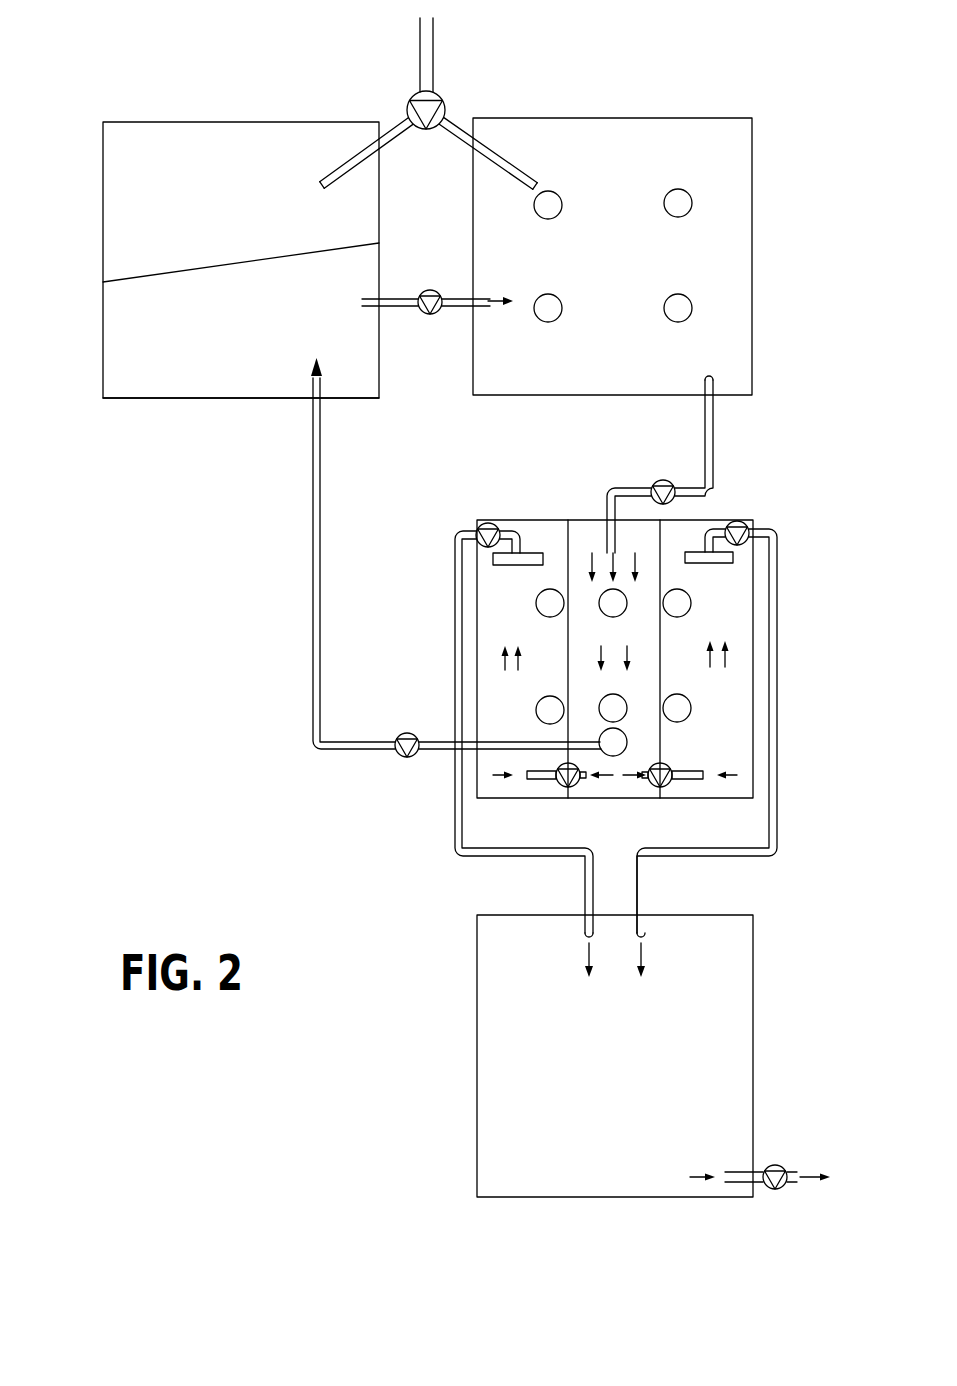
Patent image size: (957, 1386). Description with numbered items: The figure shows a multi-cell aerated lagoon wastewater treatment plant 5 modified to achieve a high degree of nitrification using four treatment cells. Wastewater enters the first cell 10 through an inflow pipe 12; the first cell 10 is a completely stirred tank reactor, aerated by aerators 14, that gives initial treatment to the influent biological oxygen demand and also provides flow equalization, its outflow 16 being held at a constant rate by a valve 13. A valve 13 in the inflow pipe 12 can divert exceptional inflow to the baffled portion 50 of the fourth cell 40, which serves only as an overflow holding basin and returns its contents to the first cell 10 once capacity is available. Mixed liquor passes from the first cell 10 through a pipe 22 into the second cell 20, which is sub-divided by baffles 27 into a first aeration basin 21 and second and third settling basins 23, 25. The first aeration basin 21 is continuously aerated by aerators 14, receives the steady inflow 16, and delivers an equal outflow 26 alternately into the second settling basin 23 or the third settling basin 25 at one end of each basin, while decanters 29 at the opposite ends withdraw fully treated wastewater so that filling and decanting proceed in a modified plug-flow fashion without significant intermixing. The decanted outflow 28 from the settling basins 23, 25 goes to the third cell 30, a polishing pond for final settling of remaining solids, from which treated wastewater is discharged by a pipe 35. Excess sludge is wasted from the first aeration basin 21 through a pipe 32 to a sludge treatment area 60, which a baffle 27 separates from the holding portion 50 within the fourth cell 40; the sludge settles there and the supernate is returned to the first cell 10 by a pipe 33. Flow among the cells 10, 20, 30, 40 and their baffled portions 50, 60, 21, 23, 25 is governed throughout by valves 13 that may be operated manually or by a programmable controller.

The multi-cell aerated lagoon wastewater treatment plant 5 is at (510, 724).
The cell 1 10 is at (768, 144).
The inflow pipe 12 is at (450, 61).
The valve 13 is at (447, 107).
The aerators 14 is at (674, 295).
The outflow / inflow 16 is at (613, 547).
The cell 2 20 is at (770, 619).
The first aeration basin 21 is at (590, 530).
The pipe 22 is at (713, 448).
The second settling basin 23 is at (487, 593).
The third settling basin 25 is at (745, 708).
The outflow 26 is at (512, 775).
The baffle 27 is at (145, 275).
The outflow 28 is at (638, 953).
The decanter 29 is at (493, 557).
The cell 3 30 is at (773, 961).
The pipe 32 is at (311, 740).
The pipe 33 is at (457, 308).
The pipe 35 is at (793, 1170).
The cell 4 40 is at (420, 417).
The baffled portion 50 is at (280, 133).
The sludge treatment area 60 is at (262, 390).